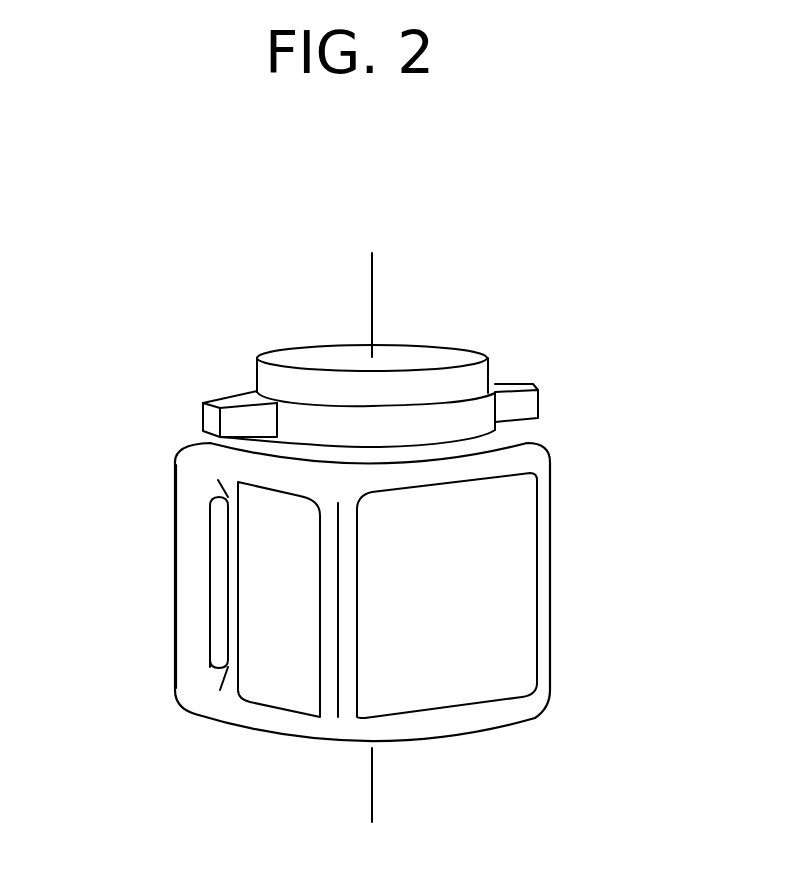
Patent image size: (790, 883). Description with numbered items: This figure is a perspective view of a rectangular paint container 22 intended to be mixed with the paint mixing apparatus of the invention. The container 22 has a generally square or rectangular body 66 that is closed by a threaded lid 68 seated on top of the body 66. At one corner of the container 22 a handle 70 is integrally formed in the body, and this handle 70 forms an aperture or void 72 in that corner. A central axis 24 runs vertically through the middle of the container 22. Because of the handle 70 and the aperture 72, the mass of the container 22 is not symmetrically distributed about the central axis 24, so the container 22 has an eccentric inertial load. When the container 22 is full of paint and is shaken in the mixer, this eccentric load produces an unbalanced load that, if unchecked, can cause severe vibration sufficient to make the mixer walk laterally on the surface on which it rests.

The paint container 22 is at (483, 305).
The central axis 24 is at (373, 278).
The body 66 is at (555, 600).
The threaded lid 68 is at (491, 376).
The handle 70 is at (173, 567).
The aperture 72 is at (212, 601).